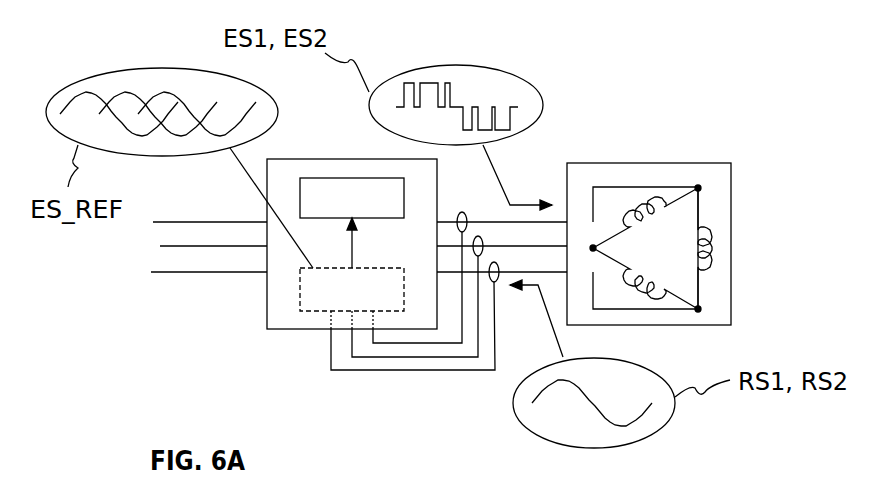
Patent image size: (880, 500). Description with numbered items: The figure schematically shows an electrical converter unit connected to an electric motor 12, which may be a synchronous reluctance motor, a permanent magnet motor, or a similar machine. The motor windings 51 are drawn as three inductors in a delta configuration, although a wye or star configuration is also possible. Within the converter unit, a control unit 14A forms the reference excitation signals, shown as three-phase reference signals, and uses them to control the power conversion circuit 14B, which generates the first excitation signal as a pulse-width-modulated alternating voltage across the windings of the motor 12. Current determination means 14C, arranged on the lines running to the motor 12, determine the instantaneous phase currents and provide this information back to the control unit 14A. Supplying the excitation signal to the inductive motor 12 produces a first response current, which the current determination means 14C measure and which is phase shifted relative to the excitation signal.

The electric motor 12 is at (676, 210).
The motor windings 51 is at (712, 285).
The control unit 14A is at (352, 289).
The power conversion circuit 14B is at (352, 198).
The current determination means 14C is at (455, 297).